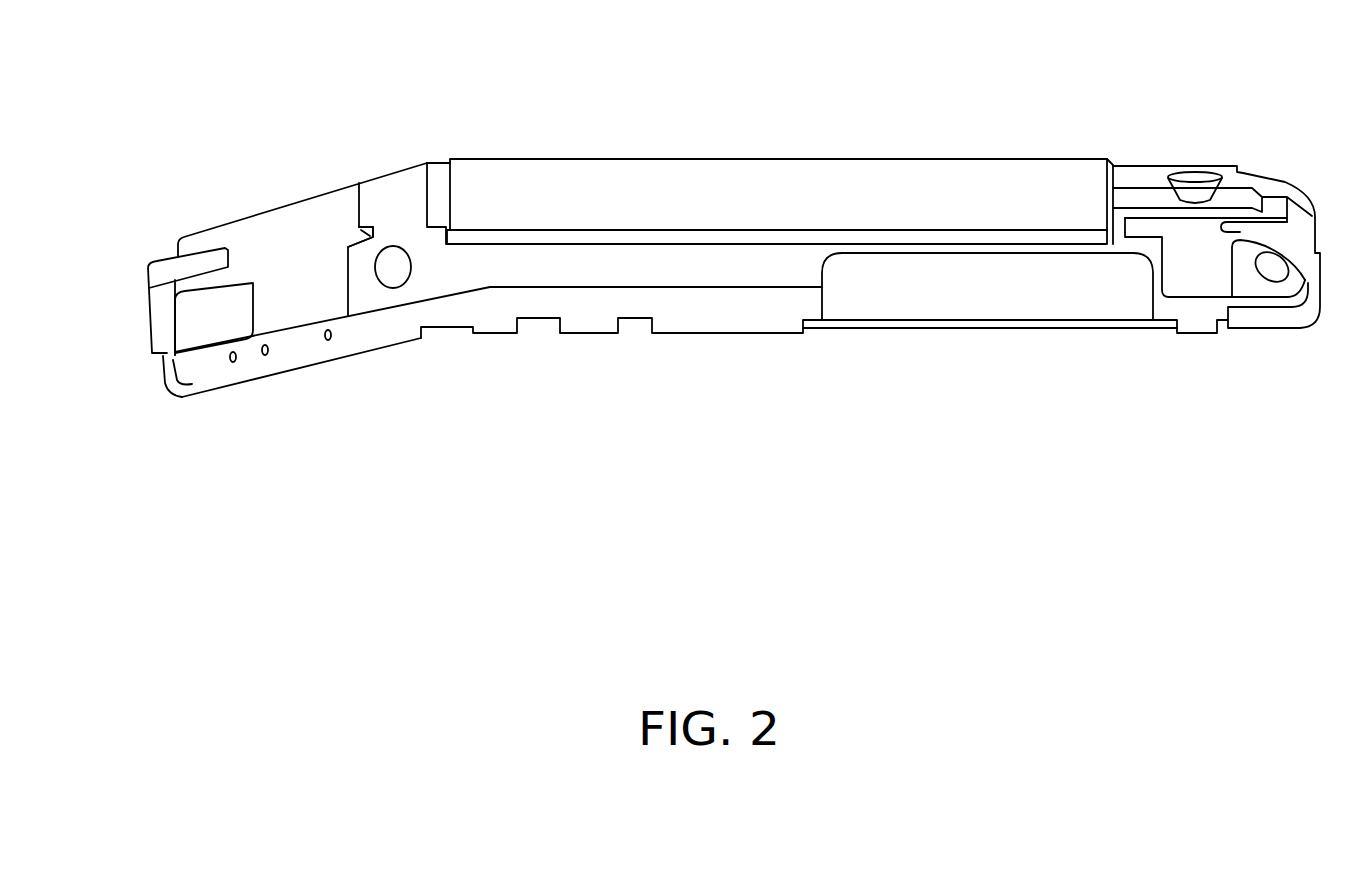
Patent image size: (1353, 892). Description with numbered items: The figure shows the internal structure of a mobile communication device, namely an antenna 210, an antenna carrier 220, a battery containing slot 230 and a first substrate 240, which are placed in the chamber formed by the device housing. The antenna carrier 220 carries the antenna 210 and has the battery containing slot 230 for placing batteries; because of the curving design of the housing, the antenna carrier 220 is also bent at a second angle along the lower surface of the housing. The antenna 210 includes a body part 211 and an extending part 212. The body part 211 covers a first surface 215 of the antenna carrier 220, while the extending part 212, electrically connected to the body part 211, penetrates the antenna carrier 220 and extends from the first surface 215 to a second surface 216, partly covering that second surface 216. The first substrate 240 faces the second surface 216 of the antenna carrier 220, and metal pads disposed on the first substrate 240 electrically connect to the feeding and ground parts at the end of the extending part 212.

The antenna 210 is at (183, 363).
The body part 211 is at (283, 222).
The extending part 212 is at (372, 228).
The first surface 215 is at (408, 178).
The second surface 216 is at (393, 347).
The antenna carrier 220 is at (187, 393).
The battery containing slot 230 is at (638, 173).
The first substrate 240 is at (1082, 322).